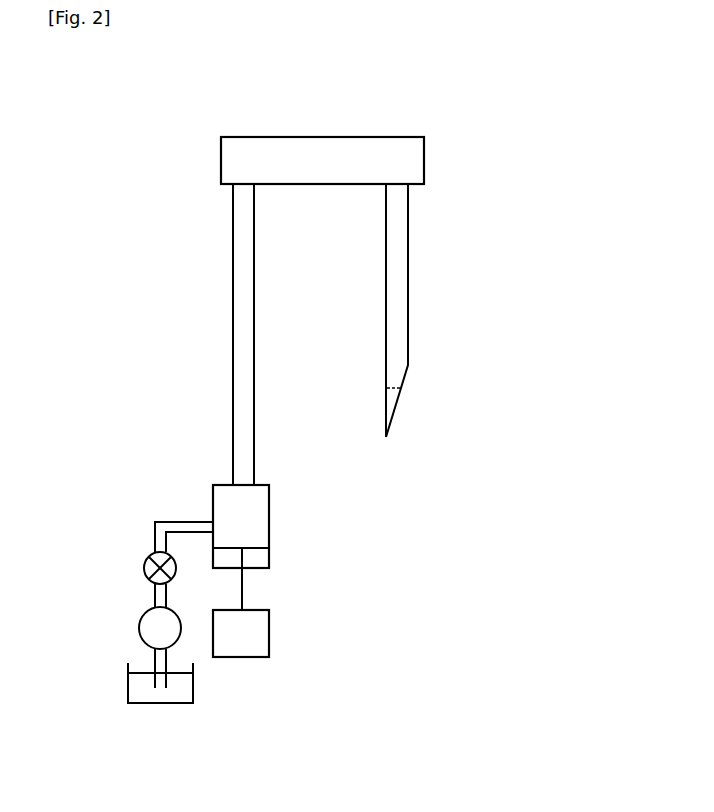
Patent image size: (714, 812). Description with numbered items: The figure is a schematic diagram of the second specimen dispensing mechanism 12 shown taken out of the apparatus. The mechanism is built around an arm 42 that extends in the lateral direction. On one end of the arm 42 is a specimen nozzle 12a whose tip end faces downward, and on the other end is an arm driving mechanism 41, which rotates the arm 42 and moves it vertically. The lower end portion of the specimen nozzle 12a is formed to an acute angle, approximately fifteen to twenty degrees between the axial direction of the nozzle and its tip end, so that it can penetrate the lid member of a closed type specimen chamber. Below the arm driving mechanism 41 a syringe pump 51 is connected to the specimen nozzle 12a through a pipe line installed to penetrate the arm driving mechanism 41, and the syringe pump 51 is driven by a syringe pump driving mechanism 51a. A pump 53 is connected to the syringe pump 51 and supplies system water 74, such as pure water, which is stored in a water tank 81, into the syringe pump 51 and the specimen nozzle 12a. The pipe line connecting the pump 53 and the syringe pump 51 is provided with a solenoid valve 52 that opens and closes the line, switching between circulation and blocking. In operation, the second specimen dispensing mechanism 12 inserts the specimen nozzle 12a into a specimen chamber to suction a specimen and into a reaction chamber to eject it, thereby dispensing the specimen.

The second specimen dispensing mechanism 12 is at (476, 97).
The specimen nozzle 12a is at (403, 257).
The arm driving mechanism 41 is at (233, 322).
The arm 42 is at (322, 143).
The syringe pump 51 is at (265, 521).
The syringe pump driving mechanism 51a is at (265, 635).
The solenoid valve 52 is at (143, 566).
The pump 53 is at (139, 629).
The system water 74 is at (140, 699).
The water tank 81 is at (196, 685).